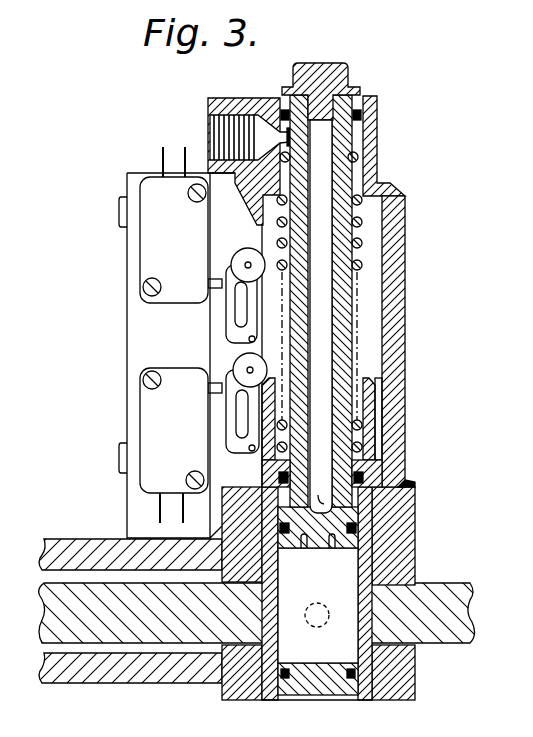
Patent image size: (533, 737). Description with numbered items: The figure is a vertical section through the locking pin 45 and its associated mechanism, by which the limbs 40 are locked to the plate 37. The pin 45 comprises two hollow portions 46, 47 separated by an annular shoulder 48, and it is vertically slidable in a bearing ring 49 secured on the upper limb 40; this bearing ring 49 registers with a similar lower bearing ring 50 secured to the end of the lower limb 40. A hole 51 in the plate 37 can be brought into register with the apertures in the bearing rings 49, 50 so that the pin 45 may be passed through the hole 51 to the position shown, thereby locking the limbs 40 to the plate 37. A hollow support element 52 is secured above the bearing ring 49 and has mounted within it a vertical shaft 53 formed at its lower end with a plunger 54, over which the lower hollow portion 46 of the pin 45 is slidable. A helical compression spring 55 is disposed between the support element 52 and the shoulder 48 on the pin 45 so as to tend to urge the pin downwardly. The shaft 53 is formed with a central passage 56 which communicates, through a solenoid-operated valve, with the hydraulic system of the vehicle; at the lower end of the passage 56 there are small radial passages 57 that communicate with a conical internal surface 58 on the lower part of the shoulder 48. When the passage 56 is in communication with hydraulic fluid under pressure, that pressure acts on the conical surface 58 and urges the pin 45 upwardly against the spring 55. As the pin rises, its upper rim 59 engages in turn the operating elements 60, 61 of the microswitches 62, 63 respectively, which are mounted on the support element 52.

The plate 37 is at (452, 618).
The limbs 40 is at (70, 556).
The pin 45 is at (368, 477).
The hollow portion 46 is at (332, 592).
The hollow portion 47 is at (362, 393).
The annular shoulder 48 is at (375, 448).
The bearing ring 49 is at (393, 513).
The lower bearing ring 50 is at (393, 670).
The hole 51 is at (374, 618).
The hollow support element 52 is at (393, 315).
The vertical shaft 53 is at (340, 176).
The plunger 54 is at (413, 487).
The helical compression spring 55 is at (362, 248).
The central passage 56 is at (320, 153).
The radial passages 57 is at (378, 478).
The conical internal surface 58 is at (263, 487).
The upper rim 59 is at (250, 368).
The operating element 60 is at (240, 372).
The operating element 61 is at (247, 250).
The microswitch 62 is at (143, 413).
The microswitch 63 is at (143, 257).